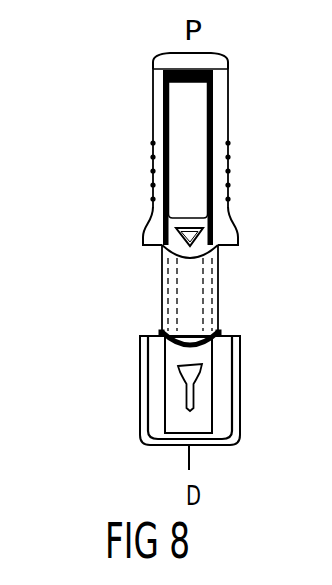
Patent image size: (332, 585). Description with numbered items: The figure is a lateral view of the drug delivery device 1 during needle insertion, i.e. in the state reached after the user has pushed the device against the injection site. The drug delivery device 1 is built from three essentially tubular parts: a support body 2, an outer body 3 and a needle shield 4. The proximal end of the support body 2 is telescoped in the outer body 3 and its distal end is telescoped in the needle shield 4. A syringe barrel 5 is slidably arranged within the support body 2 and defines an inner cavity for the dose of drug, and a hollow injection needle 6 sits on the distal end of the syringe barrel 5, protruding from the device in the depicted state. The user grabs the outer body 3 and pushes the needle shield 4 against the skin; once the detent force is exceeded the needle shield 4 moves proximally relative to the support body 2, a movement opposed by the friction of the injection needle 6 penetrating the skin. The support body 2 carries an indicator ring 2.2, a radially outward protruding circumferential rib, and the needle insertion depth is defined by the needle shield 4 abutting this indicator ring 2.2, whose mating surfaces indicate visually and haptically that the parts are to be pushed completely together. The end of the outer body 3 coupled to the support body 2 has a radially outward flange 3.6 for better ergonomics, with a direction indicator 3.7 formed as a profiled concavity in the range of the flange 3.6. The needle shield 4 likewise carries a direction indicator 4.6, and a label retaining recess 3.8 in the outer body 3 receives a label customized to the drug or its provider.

The drug delivery device 1 is at (285, 52).
The support body 2 is at (160, 285).
The indicator ring 2.2 is at (157, 333).
The outer body 3 is at (153, 104).
The flange 3.6 is at (143, 237).
The direction indicator 3.7 is at (200, 232).
The label retaining recess 3.8 is at (196, 128).
The needle shield 4 is at (240, 360).
The direction indicator 4.6 is at (180, 378).
The syringe barrel 5 is at (204, 316).
The injection needle 6 is at (191, 458).